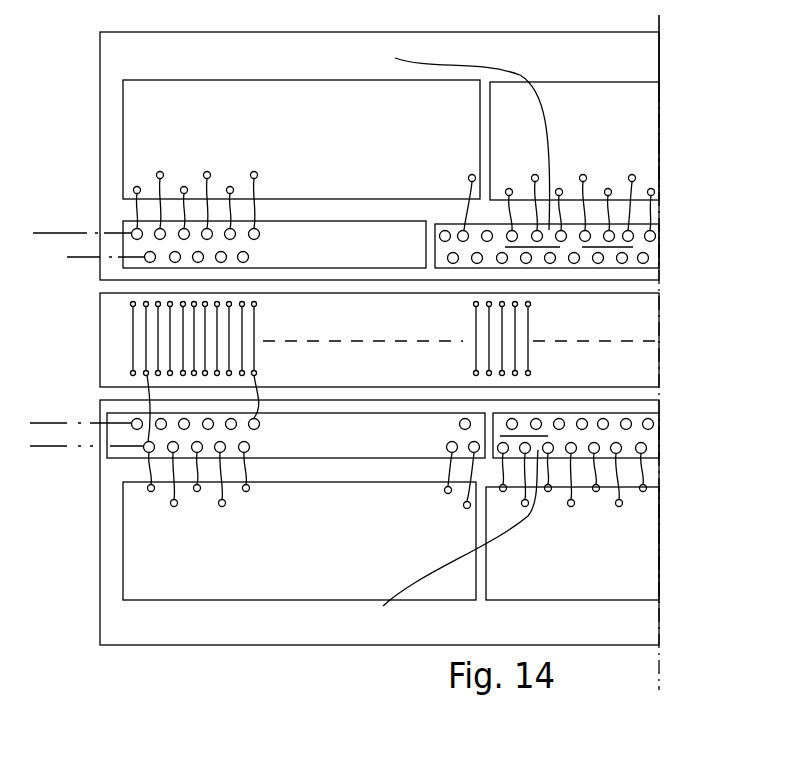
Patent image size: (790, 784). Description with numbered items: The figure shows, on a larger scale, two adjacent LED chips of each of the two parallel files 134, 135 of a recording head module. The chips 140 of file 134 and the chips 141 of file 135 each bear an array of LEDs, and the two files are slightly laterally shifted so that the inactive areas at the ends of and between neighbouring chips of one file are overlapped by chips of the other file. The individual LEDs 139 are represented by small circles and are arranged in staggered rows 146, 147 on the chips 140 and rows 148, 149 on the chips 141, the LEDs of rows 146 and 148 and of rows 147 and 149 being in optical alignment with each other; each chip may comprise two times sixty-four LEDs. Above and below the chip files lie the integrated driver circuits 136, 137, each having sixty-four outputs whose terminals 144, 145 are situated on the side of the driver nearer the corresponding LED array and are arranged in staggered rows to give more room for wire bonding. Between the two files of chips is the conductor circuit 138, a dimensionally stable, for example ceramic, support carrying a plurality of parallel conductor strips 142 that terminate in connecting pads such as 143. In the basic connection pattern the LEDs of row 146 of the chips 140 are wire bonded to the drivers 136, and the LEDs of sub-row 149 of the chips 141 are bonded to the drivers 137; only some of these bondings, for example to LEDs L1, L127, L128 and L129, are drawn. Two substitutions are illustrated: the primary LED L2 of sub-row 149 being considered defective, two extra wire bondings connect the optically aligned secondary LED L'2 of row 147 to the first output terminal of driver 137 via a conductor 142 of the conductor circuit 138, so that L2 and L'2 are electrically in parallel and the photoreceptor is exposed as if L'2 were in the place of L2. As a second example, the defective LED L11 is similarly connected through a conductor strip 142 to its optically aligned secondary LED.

The file of chips 134 is at (712, 247).
The file of chips 135 is at (700, 434).
The integrated driver circuit 136 is at (341, 135).
The integrated driver circuit 137 is at (361, 562).
The conductor circuit 138 is at (389, 378).
The LED 139 is at (204, 228).
The chip 140 is at (382, 243).
The chip 141 is at (407, 450).
The conductor strip 142 is at (147, 370).
The connecting pad 143 is at (182, 370).
The output terminal 144 is at (137, 186).
The output terminal 145 is at (170, 503).
The row of LEDs 146 is at (65, 209).
The row of LEDs 147 is at (75, 262).
The row of LEDs 148 is at (65, 393).
The sub-row of LEDs 149 is at (62, 444).
The LED L1 is at (137, 228).
The secondary LED L'2 is at (83, 252).
The primary LED L2 is at (144, 451).
The primary LED L11 is at (253, 228).
The LED L127 is at (462, 231).
The LED L128 is at (473, 453).
The LED L129 is at (512, 230).